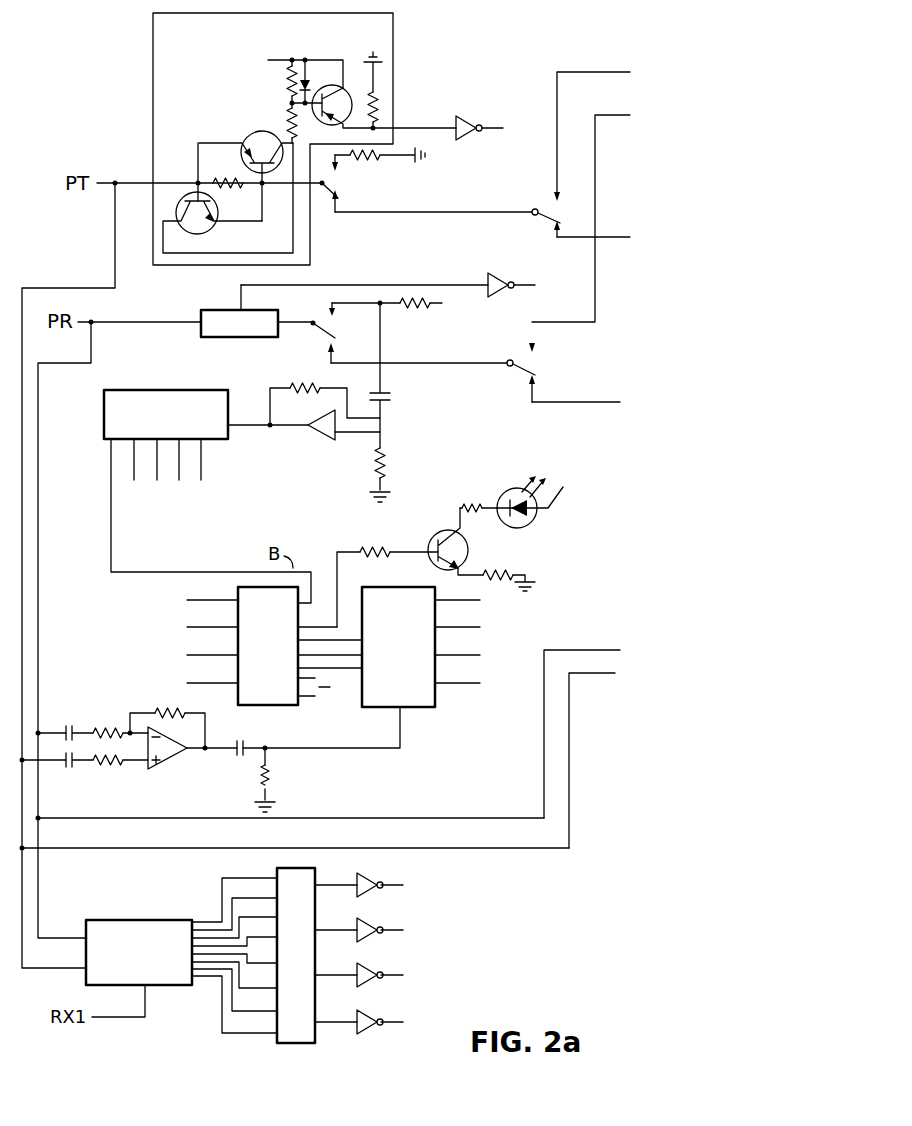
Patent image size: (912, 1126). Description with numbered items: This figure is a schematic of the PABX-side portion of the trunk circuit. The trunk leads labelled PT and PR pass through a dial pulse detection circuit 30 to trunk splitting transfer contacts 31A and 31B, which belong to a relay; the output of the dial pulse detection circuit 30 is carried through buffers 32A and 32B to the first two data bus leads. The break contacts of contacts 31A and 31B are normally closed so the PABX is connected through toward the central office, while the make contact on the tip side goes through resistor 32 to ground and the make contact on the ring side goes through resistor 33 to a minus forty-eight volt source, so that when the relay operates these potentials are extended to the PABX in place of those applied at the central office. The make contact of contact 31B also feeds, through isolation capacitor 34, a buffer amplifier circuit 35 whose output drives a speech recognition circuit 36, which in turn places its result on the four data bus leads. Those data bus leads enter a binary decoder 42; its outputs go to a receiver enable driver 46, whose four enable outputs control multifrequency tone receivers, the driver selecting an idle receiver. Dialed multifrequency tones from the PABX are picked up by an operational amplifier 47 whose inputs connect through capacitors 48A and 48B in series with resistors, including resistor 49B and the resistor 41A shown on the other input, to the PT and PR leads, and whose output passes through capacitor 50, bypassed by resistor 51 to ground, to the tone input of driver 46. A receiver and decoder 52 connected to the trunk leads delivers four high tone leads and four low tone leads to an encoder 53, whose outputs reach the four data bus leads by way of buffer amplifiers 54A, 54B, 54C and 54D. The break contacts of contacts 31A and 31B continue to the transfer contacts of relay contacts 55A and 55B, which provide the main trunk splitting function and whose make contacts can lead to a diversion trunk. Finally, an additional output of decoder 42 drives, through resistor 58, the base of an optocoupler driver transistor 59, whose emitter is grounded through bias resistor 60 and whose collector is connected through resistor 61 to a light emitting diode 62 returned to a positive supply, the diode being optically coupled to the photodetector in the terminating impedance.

The dial pulse detection circuit 30 is at (215, 310).
The trunk splitting transfer contact 31A is at (355, 183).
The trunk splitting transfer contact 31B is at (322, 318).
The resistor 32 is at (381, 160).
The buffer 32A is at (468, 120).
The buffer 32B is at (494, 276).
The resistor 33 is at (400, 306).
The isolation capacitor 34 is at (392, 400).
The buffer amplifier circuit 35 is at (323, 444).
The speech recognition circuit 36 is at (104, 420).
The resistor 41A is at (109, 727).
The binary decoder 42 is at (275, 705).
The receiver enable driver 46 is at (420, 707).
The operational amplifier 47 is at (163, 767).
The capacitor 48A is at (69, 726).
The capacitor 48B is at (74, 767).
The resistor 49B is at (106, 766).
The capacitor 50 is at (240, 757).
The resistor 51 is at (270, 776).
The receiver and decoder 52 is at (135, 920).
The encoder 53 is at (296, 1045).
The buffer amplifier 54A is at (359, 877).
The buffer amplifier 54B is at (359, 922).
The buffer amplifier 54C is at (359, 969).
The buffer amplifier 54D is at (359, 1016).
The relay contact 55A is at (545, 207).
The relay contact 55B is at (537, 365).
The resistor 58 is at (387, 572).
The optocoupler driver transistor 59 is at (436, 537).
The bias resistor 60 is at (513, 575).
The resistor 61 is at (486, 510).
The light emitting diode 62 is at (503, 492).